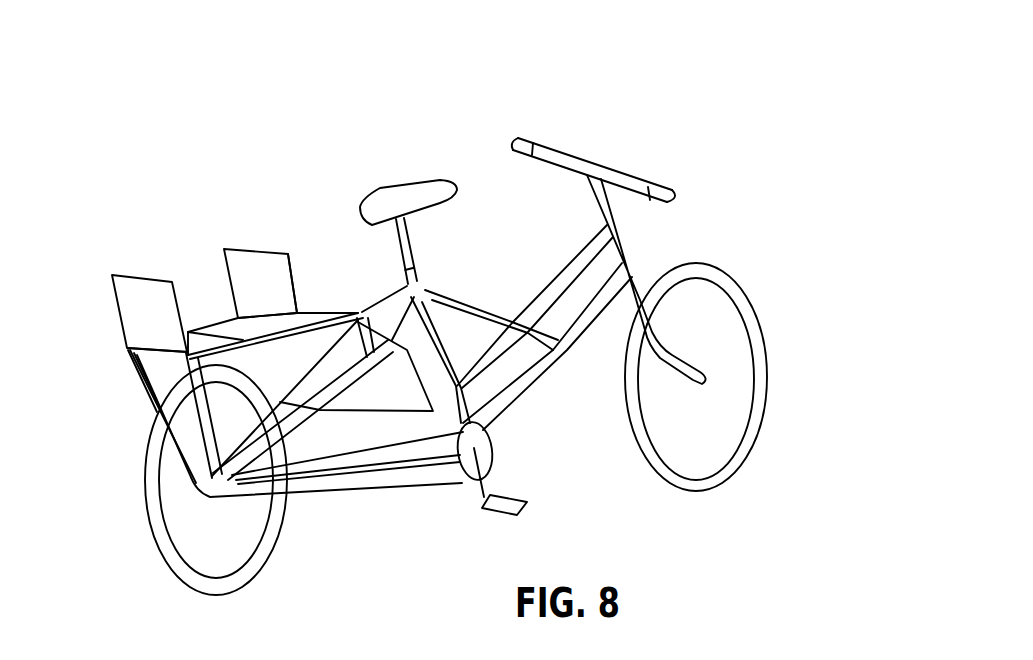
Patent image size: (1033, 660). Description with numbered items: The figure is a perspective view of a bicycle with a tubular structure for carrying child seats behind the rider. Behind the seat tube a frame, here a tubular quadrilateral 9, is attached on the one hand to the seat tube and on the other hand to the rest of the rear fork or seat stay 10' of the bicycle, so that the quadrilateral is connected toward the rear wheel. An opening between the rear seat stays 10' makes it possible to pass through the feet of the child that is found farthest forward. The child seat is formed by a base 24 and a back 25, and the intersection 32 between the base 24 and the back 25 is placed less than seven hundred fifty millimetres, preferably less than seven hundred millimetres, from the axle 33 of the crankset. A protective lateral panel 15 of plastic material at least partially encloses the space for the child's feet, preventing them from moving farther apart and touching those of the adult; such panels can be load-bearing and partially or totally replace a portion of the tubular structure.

The tubular quadrilateral 9 is at (373, 305).
The seat stay 10' is at (234, 334).
The lateral panel 15 is at (388, 392).
The base 24 is at (313, 303).
The back 25 is at (256, 296).
The intersection 32 is at (243, 322).
The axle of the crankset 33 is at (474, 448).